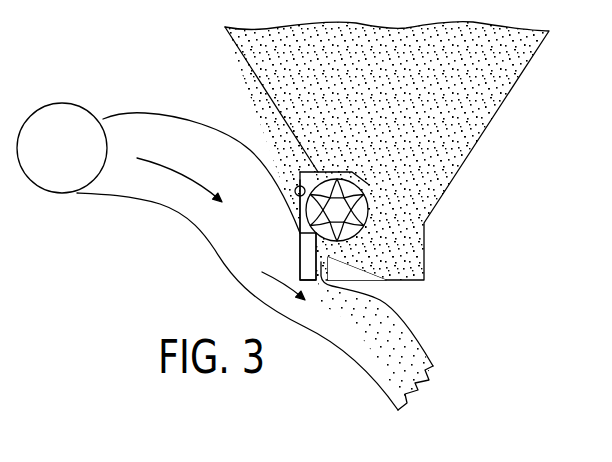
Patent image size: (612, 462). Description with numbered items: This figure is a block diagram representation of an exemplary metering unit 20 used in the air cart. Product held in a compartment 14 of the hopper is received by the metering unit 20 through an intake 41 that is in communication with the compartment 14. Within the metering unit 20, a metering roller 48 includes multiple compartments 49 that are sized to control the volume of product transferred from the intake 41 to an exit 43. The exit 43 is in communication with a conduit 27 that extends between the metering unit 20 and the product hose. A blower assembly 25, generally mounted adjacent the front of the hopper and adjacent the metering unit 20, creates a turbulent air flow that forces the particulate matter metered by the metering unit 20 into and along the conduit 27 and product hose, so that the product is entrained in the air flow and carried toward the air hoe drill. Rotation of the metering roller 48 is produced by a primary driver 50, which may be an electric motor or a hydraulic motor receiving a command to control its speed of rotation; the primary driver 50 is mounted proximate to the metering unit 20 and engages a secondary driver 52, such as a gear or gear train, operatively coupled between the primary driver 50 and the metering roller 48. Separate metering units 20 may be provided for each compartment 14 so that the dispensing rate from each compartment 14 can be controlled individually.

The compartment 14 is at (239, 51).
The metering unit 20 is at (286, 166).
The blower assembly 25 is at (61, 103).
The conduit 27 is at (210, 245).
The intake 41 is at (376, 209).
The exit 43 is at (353, 289).
The metering roller 48 is at (296, 187).
The compartments 49 is at (352, 175).
The primary driver 50 is at (298, 206).
The secondary driver 52 is at (299, 233).